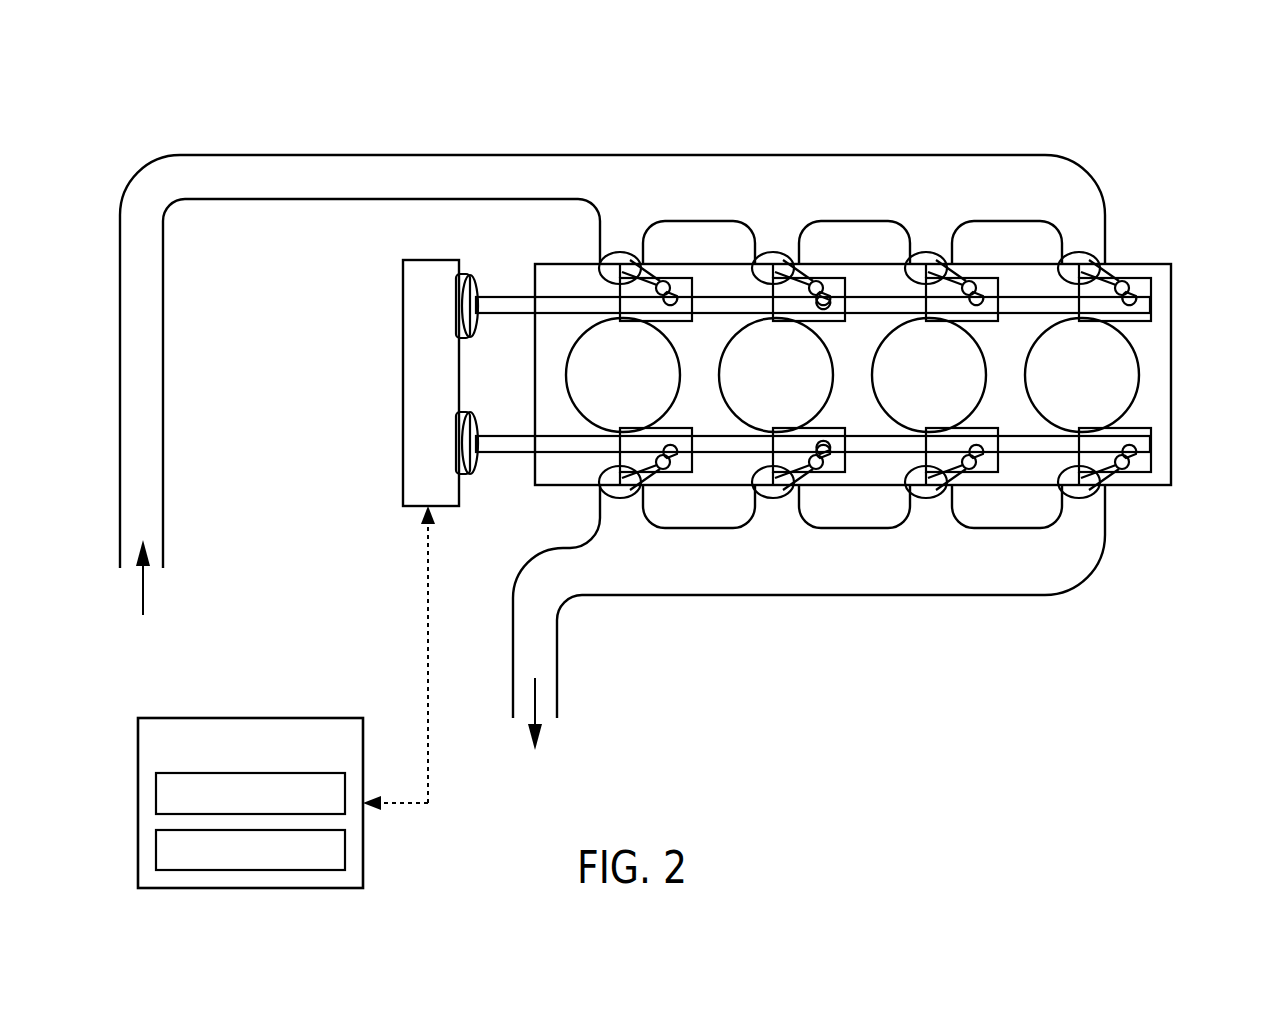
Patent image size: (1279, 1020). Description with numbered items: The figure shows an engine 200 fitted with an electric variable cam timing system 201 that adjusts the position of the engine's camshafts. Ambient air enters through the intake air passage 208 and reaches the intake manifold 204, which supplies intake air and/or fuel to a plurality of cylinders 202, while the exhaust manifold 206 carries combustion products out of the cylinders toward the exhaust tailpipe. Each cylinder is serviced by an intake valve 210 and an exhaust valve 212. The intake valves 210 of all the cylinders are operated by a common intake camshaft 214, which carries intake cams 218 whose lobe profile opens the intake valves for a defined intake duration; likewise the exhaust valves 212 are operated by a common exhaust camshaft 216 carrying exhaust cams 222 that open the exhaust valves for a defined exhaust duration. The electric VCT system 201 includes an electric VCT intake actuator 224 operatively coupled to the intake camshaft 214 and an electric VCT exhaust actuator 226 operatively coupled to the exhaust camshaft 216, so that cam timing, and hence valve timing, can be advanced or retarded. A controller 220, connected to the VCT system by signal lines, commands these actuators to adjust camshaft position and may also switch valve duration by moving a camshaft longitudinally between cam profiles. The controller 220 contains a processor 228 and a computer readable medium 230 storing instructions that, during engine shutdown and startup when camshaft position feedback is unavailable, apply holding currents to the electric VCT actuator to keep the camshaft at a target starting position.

The engine 200 is at (168, 57).
The electric VCT system 201 is at (403, 476).
The cylinders 202 is at (1214, 380).
The intake manifold 204 is at (970, 205).
The exhaust manifold 206 is at (986, 574).
The intake air passage 208 is at (165, 297).
The intake valve 210 is at (773, 256).
The exhaust valve 212 is at (762, 502).
The intake camshaft 214 is at (550, 297).
The exhaust camshaft 216 is at (571, 455).
The intake cam 218 is at (838, 279).
The controller 220 is at (340, 754).
The exhaust cam 222 is at (827, 456).
The electric VCT intake actuator 224 is at (462, 273).
The electric VCT exhaust actuator 226 is at (462, 476).
The processor 228 is at (333, 806).
The computer readable medium 230 is at (292, 862).